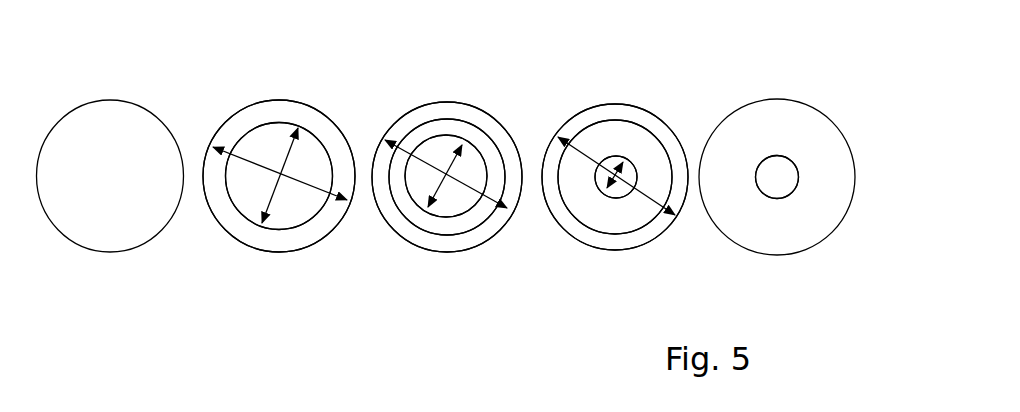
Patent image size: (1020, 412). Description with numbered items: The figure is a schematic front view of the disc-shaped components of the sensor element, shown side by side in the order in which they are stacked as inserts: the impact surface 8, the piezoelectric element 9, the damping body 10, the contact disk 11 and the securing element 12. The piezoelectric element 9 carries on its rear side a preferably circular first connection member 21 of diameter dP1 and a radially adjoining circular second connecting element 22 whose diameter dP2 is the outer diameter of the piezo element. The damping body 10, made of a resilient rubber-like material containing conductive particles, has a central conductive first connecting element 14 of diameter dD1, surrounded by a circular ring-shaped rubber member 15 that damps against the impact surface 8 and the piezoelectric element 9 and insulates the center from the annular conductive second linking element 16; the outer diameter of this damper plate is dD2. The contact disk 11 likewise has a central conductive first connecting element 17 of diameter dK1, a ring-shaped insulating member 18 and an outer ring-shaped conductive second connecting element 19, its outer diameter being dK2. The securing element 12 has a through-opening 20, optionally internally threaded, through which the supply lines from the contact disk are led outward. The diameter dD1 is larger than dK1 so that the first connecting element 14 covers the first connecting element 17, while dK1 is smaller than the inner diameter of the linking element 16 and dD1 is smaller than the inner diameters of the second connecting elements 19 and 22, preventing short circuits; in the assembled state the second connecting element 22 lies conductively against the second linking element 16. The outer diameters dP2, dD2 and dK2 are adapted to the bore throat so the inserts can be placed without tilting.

The impact surface 8 is at (109, 90).
The piezoelectric element 9 is at (275, 90).
The damping body 10 is at (456, 92).
The contact disk 11 is at (618, 92).
The securing element 12 is at (773, 90).
The first connecting element 14 is at (455, 203).
The rubber member 15 is at (477, 213).
The second linking element 16 is at (435, 240).
The first connecting element 17 is at (630, 170).
The insulating member 18 is at (597, 132).
The second connecting element 19 is at (622, 242).
The through-opening 20 is at (792, 165).
The first connection member 21 is at (315, 145).
The second connecting element 22 is at (235, 222).
The diameter of first connection member dP1 is at (275, 197).
The outer diameter of piezoelectric element dP2 is at (250, 158).
The diameter of first connecting element of damping body dD1 is at (453, 162).
The outer diameter of damping body dD2 is at (425, 163).
The diameter of first connecting element of contact disk dK1 is at (618, 187).
The outer diameter of contact disk dK2 is at (585, 155).